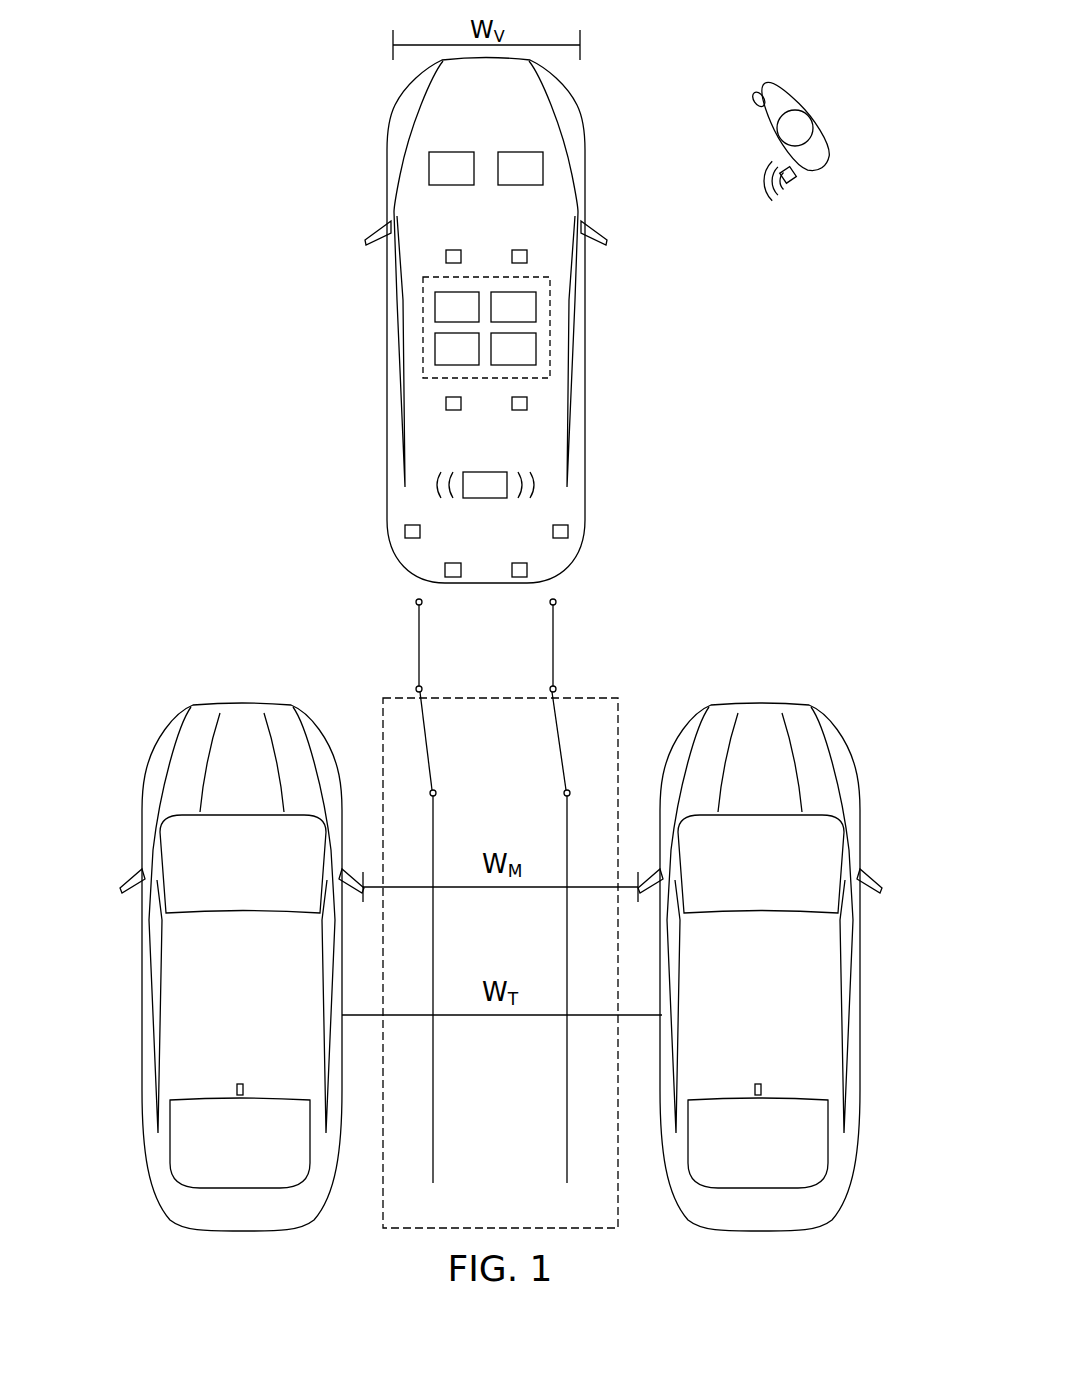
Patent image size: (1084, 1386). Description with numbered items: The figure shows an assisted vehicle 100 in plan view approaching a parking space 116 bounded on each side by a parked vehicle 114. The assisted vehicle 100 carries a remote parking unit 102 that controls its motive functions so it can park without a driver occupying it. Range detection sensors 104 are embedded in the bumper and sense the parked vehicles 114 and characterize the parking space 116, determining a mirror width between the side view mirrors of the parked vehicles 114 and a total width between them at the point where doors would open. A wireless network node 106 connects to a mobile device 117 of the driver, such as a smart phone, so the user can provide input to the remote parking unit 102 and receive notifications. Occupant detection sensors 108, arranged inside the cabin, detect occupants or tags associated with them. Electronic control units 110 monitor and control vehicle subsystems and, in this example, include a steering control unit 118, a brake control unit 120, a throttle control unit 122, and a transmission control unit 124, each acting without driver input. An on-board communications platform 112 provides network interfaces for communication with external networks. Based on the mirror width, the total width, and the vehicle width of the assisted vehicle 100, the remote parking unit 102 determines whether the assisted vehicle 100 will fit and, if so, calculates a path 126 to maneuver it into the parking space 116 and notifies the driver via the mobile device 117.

The assisted vehicle 100 is at (585, 133).
The remote parking unit 102 is at (451, 168).
The range detection sensors 104 is at (405, 531).
The wireless network node 106 is at (485, 485).
The occupant detection sensors 108 is at (451, 250).
The electronic control units 110 is at (550, 304).
The on-board communications platform 112 is at (520, 168).
The parked vehicle 114 is at (244, 704).
The parking space 116 is at (618, 720).
The mobile device 117 is at (793, 185).
The steering control unit 118 is at (457, 307).
The brake control unit 120 is at (513, 307).
The throttle control unit 122 is at (457, 349).
The transmission control unit 124 is at (513, 349).
The path 126 is at (419, 653).